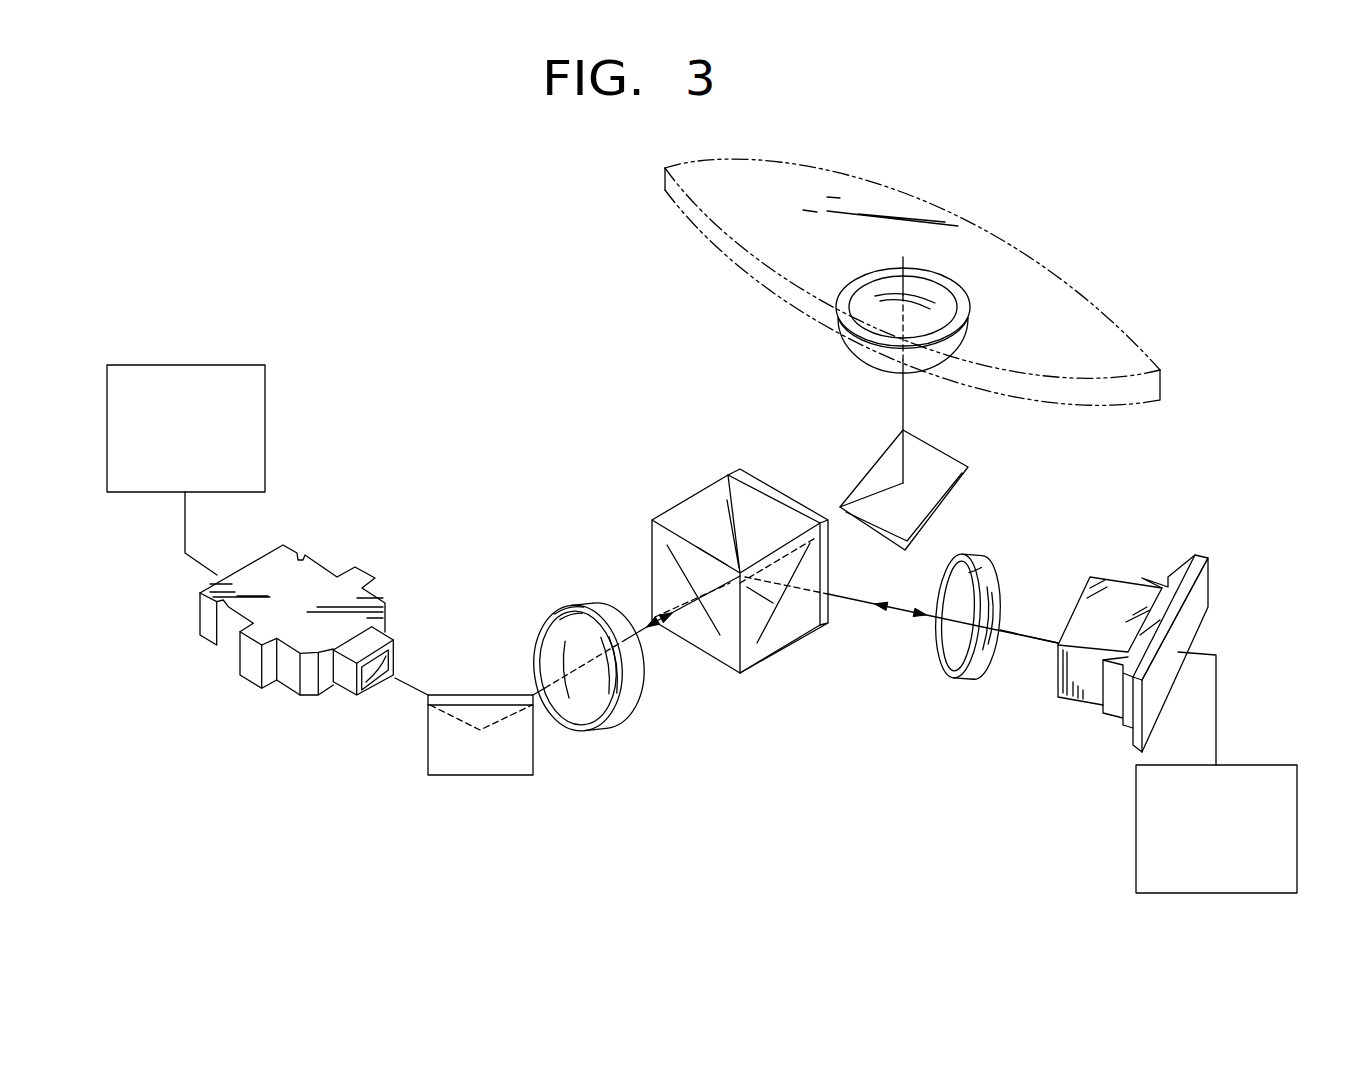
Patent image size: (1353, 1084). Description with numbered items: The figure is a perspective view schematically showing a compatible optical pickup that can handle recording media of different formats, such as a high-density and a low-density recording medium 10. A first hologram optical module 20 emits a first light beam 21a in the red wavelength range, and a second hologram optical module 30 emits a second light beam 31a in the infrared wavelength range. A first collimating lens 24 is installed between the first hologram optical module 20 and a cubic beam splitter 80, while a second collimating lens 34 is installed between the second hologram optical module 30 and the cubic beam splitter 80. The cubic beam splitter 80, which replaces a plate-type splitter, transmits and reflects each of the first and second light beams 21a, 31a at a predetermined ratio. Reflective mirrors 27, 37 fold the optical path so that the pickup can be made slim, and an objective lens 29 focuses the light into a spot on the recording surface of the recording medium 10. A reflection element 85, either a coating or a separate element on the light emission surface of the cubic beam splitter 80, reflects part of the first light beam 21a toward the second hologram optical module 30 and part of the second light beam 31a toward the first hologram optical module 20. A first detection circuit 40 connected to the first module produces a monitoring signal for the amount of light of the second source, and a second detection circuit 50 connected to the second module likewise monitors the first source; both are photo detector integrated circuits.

The recording medium 10 is at (765, 285).
The first hologram optical module 20 is at (363, 558).
The first light beam 21a is at (413, 685).
The first collimating lens 24 is at (592, 713).
The reflective mirror 27 is at (952, 490).
The objective lens 29 is at (862, 360).
The second hologram optical module 30 is at (1065, 702).
The second light beam 31a is at (1037, 636).
The second collimating lens 34 is at (953, 673).
The reflective mirror 37 is at (448, 772).
The first detection circuit 40 is at (208, 365).
The second detection circuit 50 is at (1217, 894).
The cubic beam splitter 80 is at (657, 575).
The reflection element 85 is at (764, 486).